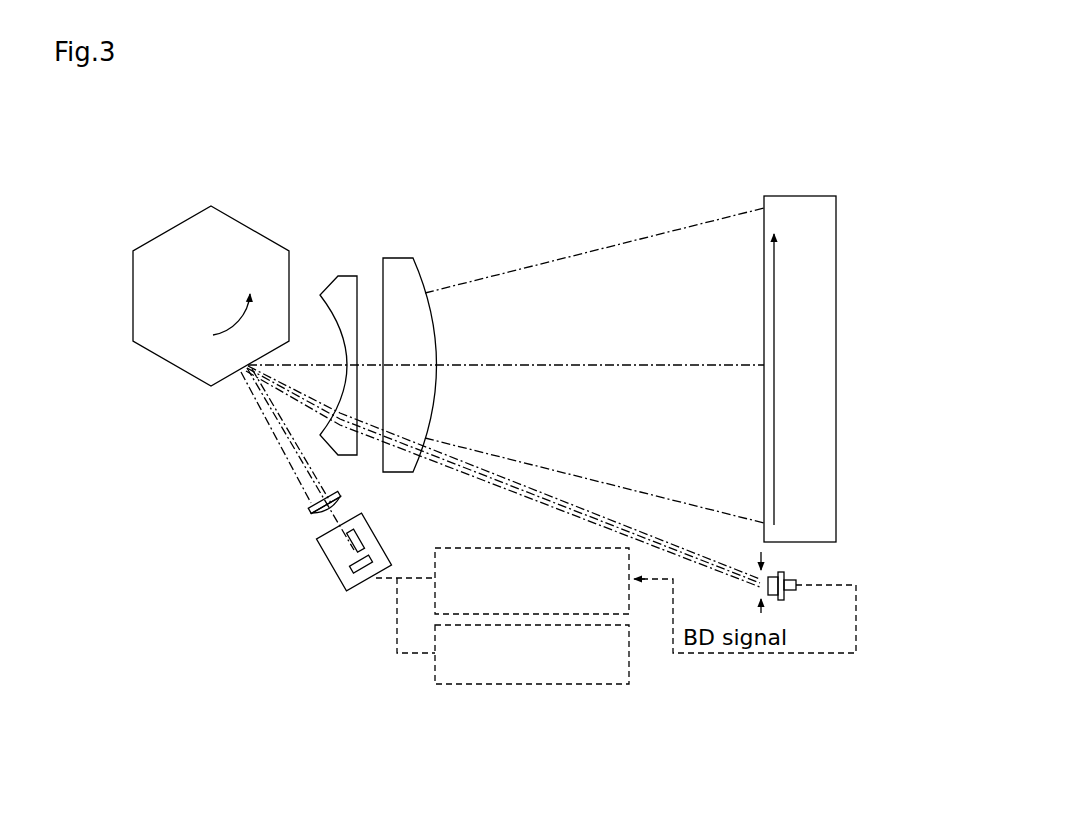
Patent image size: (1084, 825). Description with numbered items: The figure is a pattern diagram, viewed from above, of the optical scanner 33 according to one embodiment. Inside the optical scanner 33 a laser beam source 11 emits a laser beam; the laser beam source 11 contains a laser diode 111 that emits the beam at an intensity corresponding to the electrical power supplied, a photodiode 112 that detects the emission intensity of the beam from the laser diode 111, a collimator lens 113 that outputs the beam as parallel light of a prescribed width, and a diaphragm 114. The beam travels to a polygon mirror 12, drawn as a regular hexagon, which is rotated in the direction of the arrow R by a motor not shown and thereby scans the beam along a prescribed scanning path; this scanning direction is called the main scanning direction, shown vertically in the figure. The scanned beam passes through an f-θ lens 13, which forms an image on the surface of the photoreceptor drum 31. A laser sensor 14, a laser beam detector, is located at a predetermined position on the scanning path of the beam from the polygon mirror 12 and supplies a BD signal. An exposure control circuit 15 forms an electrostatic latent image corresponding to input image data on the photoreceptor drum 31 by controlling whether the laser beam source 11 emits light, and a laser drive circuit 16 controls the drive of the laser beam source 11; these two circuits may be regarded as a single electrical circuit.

The optical scanner 33 is at (127, 168).
The polygon mirror 12 is at (134, 300).
The f-θ lens 13 is at (325, 250).
The photoreceptor drum 31 is at (805, 196).
The laser beam source 11 is at (302, 590).
The laser diode 111 is at (370, 559).
The photodiode 112 is at (358, 532).
The collimator lens 113 is at (318, 517).
The diaphragm 114 is at (354, 483).
The laser sensor 14 is at (787, 597).
The exposure control circuit 15 is at (471, 547).
The laser drive circuit 16 is at (486, 687).